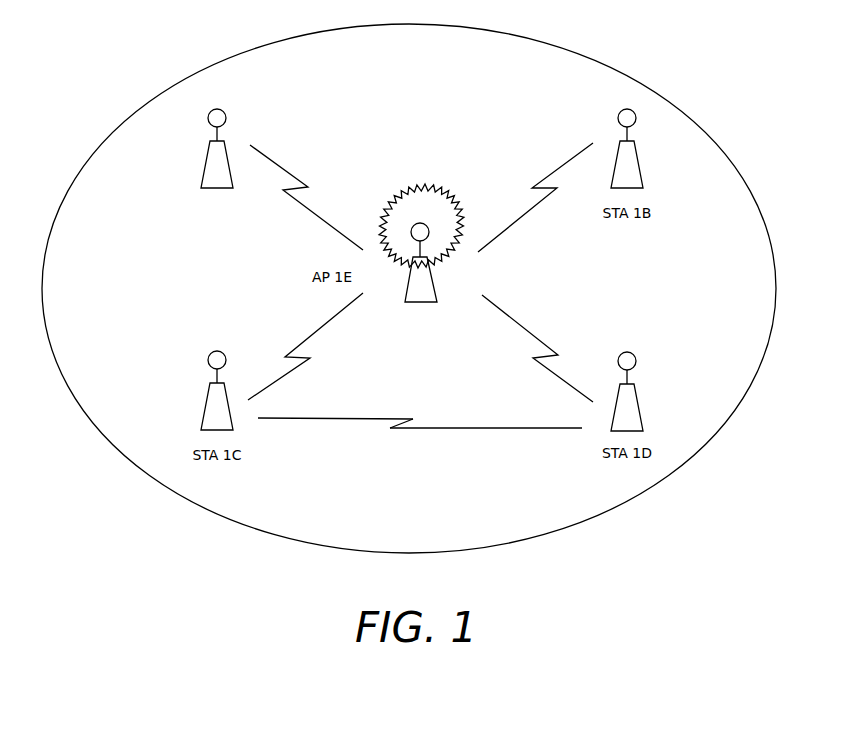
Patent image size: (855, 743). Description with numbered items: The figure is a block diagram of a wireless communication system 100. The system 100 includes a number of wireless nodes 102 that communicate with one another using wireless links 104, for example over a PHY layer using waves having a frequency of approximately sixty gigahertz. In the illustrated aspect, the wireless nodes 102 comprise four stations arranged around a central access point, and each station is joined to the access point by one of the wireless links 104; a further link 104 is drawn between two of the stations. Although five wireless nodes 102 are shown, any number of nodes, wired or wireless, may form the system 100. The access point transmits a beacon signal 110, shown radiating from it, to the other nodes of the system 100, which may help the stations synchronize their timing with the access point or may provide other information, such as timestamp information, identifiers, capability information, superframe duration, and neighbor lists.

The wireless communication system 100 is at (164, 41).
The wireless nodes 102 is at (208, 163).
The wireless links 104 is at (513, 224).
The beacon signal 110 is at (395, 134).